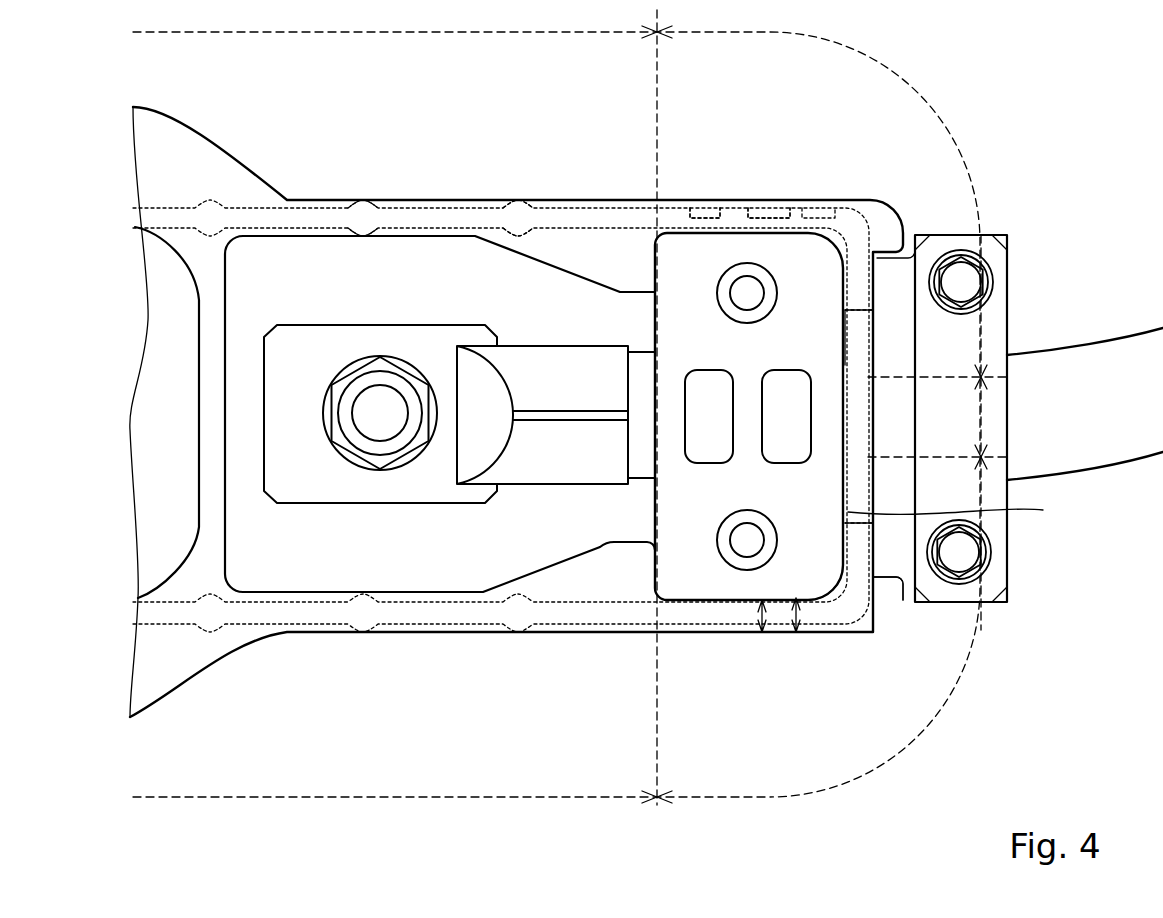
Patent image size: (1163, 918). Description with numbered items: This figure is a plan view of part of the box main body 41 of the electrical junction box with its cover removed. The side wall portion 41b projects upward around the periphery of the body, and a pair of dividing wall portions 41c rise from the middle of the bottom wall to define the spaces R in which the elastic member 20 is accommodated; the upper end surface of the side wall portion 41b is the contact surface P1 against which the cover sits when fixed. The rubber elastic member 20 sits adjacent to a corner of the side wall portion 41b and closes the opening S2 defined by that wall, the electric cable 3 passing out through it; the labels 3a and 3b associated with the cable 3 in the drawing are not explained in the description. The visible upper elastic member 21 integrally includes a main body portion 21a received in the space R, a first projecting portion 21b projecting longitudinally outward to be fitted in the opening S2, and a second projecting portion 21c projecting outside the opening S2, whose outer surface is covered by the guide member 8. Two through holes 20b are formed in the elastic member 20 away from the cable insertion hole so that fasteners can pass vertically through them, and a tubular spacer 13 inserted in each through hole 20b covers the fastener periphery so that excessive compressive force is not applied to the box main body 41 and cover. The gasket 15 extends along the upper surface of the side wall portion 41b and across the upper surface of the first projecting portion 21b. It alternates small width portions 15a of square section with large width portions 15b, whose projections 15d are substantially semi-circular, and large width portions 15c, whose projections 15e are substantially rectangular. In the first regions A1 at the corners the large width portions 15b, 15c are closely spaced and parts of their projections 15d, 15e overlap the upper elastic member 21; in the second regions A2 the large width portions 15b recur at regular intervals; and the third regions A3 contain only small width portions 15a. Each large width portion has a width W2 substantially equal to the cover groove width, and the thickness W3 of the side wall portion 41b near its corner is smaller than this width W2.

The electric cable 3 is at (1118, 463).
The arm end portion 3a is at (642, 480).
The arm base portion 3b is at (317, 477).
The guide member 8 is at (958, 603).
The tubular spacer 13 is at (733, 306).
The gasket 15 is at (558, 207).
The small width portion 15a is at (460, 220).
The large width portion 15b is at (363, 205).
The large width portion 15c is at (672, 223).
The projection 15d is at (840, 363).
The projection 15e is at (787, 223).
The elastic member 20 is at (695, 600).
The through hole 20b is at (722, 297).
The upper elastic member 21 is at (749, 486).
The main body portion 21a is at (825, 595).
The first projecting portion 21b is at (873, 590).
The second projecting portion 21c is at (897, 560).
The box main body 41 is at (415, 197).
The side wall portion 41b is at (617, 206).
The dividing wall portion 41c is at (227, 277).
The first region A1 is at (875, 422).
The second region A2 is at (451, 414).
The third region A3 is at (942, 432).
The opening S2 is at (962, 510).
The width of large width portion W2 is at (757, 612).
The thickness of side wall portion corner vicinity W3 is at (794, 613).
The contact surface P1 is at (415, 632).
The space R is at (642, 520).